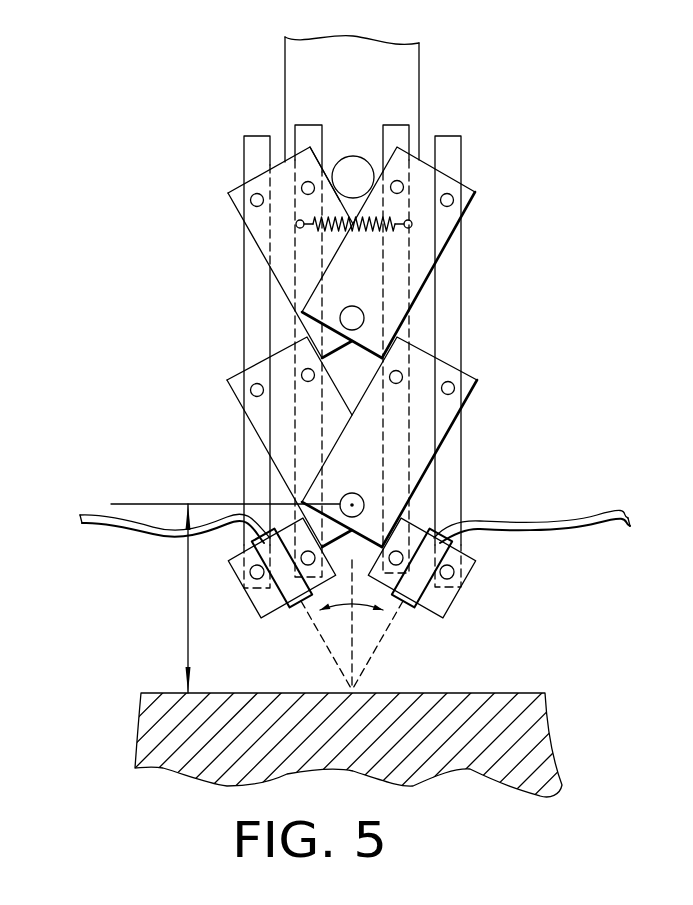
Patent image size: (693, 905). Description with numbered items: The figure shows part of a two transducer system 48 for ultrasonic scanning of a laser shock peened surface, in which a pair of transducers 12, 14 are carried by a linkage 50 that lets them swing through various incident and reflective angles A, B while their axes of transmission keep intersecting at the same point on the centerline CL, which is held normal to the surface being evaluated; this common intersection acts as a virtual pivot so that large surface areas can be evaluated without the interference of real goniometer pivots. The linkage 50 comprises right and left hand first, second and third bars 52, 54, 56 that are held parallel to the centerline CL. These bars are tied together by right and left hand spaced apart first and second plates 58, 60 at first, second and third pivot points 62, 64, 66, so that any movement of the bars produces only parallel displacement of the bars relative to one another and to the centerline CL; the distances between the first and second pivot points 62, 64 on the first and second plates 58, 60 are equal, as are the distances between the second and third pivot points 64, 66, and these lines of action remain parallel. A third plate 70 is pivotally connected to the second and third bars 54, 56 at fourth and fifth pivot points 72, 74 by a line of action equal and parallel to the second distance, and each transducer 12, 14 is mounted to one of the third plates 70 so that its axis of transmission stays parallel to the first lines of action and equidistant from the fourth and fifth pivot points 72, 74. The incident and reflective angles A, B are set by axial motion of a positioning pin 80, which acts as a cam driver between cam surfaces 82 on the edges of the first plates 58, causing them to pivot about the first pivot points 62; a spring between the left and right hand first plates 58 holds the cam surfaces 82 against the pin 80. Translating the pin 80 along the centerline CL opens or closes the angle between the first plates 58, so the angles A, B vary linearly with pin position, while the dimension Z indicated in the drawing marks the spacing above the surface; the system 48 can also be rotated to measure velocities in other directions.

The linkage 50 is at (478, 88).
The first bars 52 is at (420, 68).
The second bars 54 is at (296, 135).
The third bars 56 is at (244, 162).
The first plates 58 is at (234, 204).
The second plates 60 is at (243, 371).
The first pivot points 62 is at (353, 318).
The second pivot points 64 is at (405, 190).
The third pivot points 66 is at (465, 204).
The third plate 70 is at (466, 584).
The fourth pivot point 72 is at (399, 551).
The fifth pivot point 74 is at (454, 570).
The positioning pin 80 is at (338, 157).
The cam surfaces 82 is at (365, 160).
The transducer 12 is at (451, 567).
The transducer 14 is at (284, 602).
The two transducer system 48 is at (525, 650).
The working distance Z is at (186, 596).
The incident angle A is at (322, 612).
The reflective angle B is at (381, 613).
The centerline CL is at (355, 670).